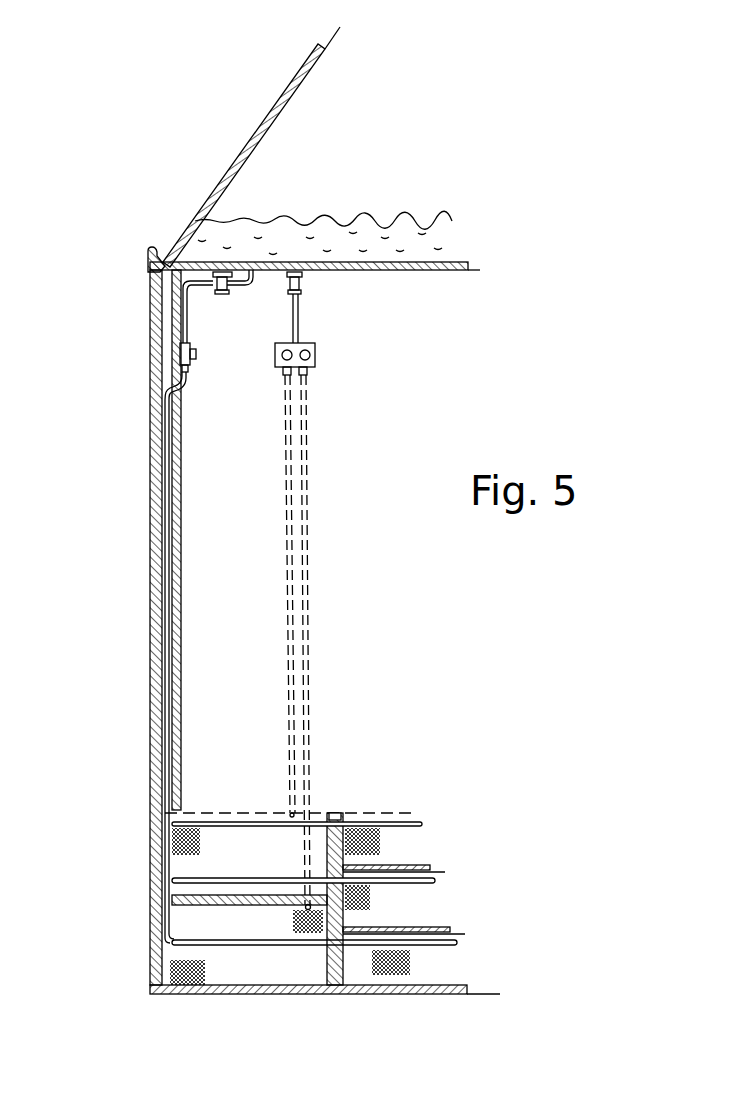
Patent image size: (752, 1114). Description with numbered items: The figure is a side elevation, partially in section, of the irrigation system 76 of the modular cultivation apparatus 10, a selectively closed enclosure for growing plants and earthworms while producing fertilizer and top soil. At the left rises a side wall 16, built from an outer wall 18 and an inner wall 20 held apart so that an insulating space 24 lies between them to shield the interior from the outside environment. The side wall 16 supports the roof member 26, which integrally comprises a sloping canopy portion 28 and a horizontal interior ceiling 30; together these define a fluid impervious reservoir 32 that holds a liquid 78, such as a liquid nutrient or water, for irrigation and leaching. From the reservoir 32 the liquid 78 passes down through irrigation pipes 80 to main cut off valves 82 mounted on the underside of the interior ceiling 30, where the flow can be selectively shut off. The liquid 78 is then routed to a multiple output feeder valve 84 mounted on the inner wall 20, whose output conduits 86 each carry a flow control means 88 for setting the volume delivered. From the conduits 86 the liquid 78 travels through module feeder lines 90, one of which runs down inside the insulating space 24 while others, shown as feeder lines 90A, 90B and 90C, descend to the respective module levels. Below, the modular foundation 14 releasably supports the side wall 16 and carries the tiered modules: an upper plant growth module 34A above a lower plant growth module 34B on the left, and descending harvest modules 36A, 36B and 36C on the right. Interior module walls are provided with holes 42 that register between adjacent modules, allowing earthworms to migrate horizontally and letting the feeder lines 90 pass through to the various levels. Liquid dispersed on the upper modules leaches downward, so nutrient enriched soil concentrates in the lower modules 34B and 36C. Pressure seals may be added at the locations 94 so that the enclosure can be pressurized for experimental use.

The modular cultivation apparatus 10 is at (125, 201).
The modular foundation 14 is at (230, 1000).
The side wall 16 is at (147, 463).
The outer wall 18 is at (156, 590).
The inner wall 20 is at (181, 510).
The insulating space 24 is at (160, 350).
The roof member 26 is at (230, 150).
The canopy portion 28 is at (300, 83).
The interior ceiling 30 is at (430, 271).
The reservoir 32 is at (336, 222).
The liquid 78 is at (305, 250).
The irrigation system 76 is at (348, 342).
The irrigation pipe 80 is at (238, 285).
The main cut off valve 82 is at (224, 295).
The multiple output feeder valve 84 is at (197, 357).
The output conduit 86 is at (187, 372).
The flow control means 88 is at (181, 322).
The module feeder line 90 is at (166, 648).
The module feeder line (level A) 90A is at (287, 578).
The module feeder line (level B) 90B is at (311, 620).
The module feeder line (level C) 90C is at (270, 997).
The pressure seal location 94 is at (152, 815).
The hole 42 is at (347, 815).
The upper level plant growth module 34A is at (155, 855).
The lower level plant growth module 34B is at (155, 960).
The upper level harvest module 36A is at (412, 848).
The middle level harvest module 36B is at (425, 911).
The lower level harvest module 36C is at (452, 972).